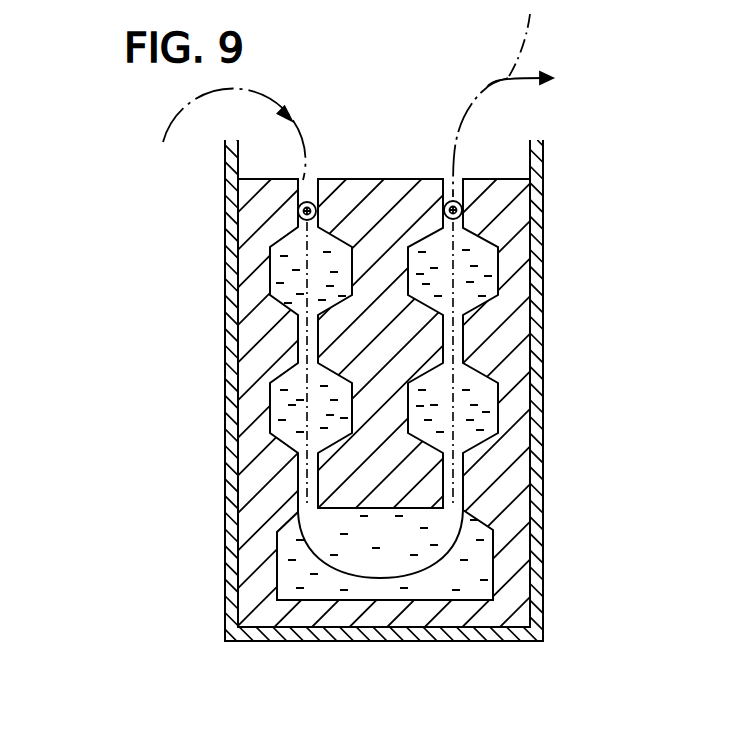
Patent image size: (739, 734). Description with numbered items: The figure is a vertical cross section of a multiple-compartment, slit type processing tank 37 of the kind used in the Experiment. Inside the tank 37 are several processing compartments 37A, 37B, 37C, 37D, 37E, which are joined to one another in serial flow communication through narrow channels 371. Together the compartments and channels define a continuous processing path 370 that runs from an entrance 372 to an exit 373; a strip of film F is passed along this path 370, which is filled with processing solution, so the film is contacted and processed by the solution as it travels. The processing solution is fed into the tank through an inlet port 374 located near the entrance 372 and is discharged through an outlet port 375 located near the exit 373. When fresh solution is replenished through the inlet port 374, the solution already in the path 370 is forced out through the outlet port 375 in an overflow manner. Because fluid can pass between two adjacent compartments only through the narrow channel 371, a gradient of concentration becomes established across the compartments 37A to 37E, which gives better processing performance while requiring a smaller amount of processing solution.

The processing tank 37 is at (548, 628).
The continuous processing path 370 is at (498, 370).
The narrow channel 371 is at (302, 332).
The entrance 372 is at (300, 178).
The exit 373 is at (445, 180).
The inlet port 374 is at (298, 211).
The outlet port 375 is at (481, 179).
The processing compartment 37A is at (277, 267).
The processing compartment 37B is at (280, 415).
The processing compartment 37C is at (323, 590).
The processing compartment 37D is at (488, 428).
The processing compartment 37E is at (427, 247).